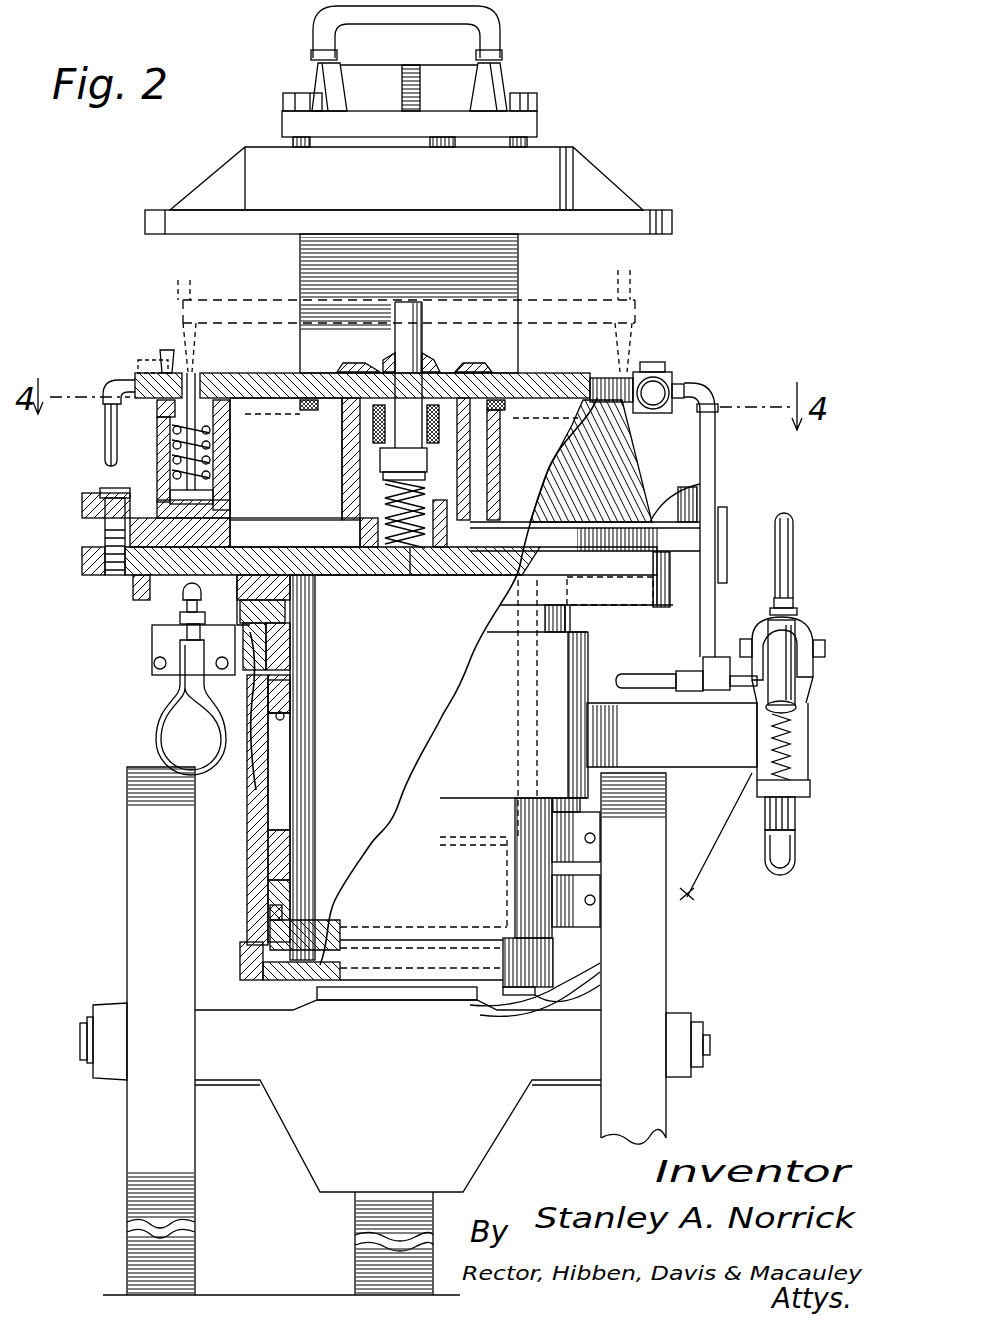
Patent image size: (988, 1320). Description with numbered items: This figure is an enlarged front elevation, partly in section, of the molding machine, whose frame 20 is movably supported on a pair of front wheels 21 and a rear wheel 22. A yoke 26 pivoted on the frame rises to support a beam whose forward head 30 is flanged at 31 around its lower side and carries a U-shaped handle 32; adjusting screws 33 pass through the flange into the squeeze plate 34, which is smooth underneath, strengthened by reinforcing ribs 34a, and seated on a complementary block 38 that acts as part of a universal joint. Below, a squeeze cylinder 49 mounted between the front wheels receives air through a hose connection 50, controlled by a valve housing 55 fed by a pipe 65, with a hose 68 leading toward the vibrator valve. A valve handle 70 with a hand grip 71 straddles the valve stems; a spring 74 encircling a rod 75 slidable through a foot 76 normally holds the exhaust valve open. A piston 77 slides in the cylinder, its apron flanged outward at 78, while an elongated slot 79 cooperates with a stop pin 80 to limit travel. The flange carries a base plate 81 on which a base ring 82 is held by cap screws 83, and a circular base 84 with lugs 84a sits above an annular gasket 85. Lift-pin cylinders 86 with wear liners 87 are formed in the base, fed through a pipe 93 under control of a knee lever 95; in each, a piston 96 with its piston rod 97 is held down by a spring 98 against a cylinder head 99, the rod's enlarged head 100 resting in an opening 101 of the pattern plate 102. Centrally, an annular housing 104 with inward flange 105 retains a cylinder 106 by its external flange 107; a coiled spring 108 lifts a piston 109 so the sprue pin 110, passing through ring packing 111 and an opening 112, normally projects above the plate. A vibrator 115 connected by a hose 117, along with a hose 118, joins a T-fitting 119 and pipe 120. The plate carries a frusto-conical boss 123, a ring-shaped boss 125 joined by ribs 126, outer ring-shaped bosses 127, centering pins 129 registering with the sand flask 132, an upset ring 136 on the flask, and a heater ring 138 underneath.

The frame 20 is at (266, 1105).
The front wheels 21 is at (127, 1133).
The rear wheel 22 is at (355, 1220).
The second yoke 26 is at (505, 258).
The head 30 is at (514, 68).
The flange 31 is at (537, 125).
The U-shaped handle 32 is at (490, 30).
The adjusting screws 33 is at (298, 100).
The squeeze plate 34 is at (672, 224).
The reinforcing ribs 34a is at (587, 166).
The complementary block 38 is at (413, 143).
The squeeze cylinder 49 is at (240, 958).
The hose connection 50 is at (688, 898).
The valve housing 55 is at (797, 762).
The pipe 65 is at (783, 868).
The hose 68 is at (790, 548).
The valve handle 70 is at (803, 627).
The hand grip 71 is at (787, 658).
The spring 74 is at (790, 724).
The rod 75 is at (790, 735).
The foot 76 is at (762, 779).
The piston 77 is at (290, 880).
The flange 78 is at (258, 610).
The elongated slot 79 is at (290, 815).
The stop pin 80 is at (288, 723).
The base plate 81 is at (132, 593).
The base ring 82 is at (82, 528).
The cap screws 83 is at (102, 484).
The base 84 is at (623, 462).
The lugs 84a is at (82, 496).
The annular gasket 85 is at (675, 500).
The cylinders 86 is at (160, 470).
The wear liners 87 is at (212, 465).
The pipe 93 is at (183, 595).
The knee lever 95 is at (173, 723).
The piston 96 is at (212, 493).
The piston rod 97 is at (170, 445).
The spring 98 is at (210, 450).
The cylinder head 99 is at (203, 408).
The enlarged head 100 is at (197, 385).
The opening 101 is at (200, 385).
The pattern plate 102 is at (232, 405).
The annular housing 104 is at (467, 457).
The flange 105 is at (455, 500).
The cylinder 106 is at (465, 478).
The external flange 107 is at (448, 533).
The coiled spring 108 is at (410, 558).
The piston 109 is at (390, 478).
The sprue pin 110 is at (382, 460).
The ring packing 111 is at (370, 420).
The opening 112 is at (442, 378).
The vibrator 115 is at (660, 390).
The hose 117 is at (718, 430).
The hose 118 is at (102, 425).
The T-fitting 119 is at (710, 684).
The pipe 120 is at (745, 692).
The frusto-conical boss 123 is at (387, 370).
The ring-shaped boss 125 is at (480, 352).
The ribs 126 is at (446, 362).
The ring-shaped bosses 127 is at (550, 372).
The centering pins 129 is at (163, 356).
The sand flask 132 is at (178, 335).
The upset ring 136 is at (180, 300).
The heater ring 138 is at (508, 420).